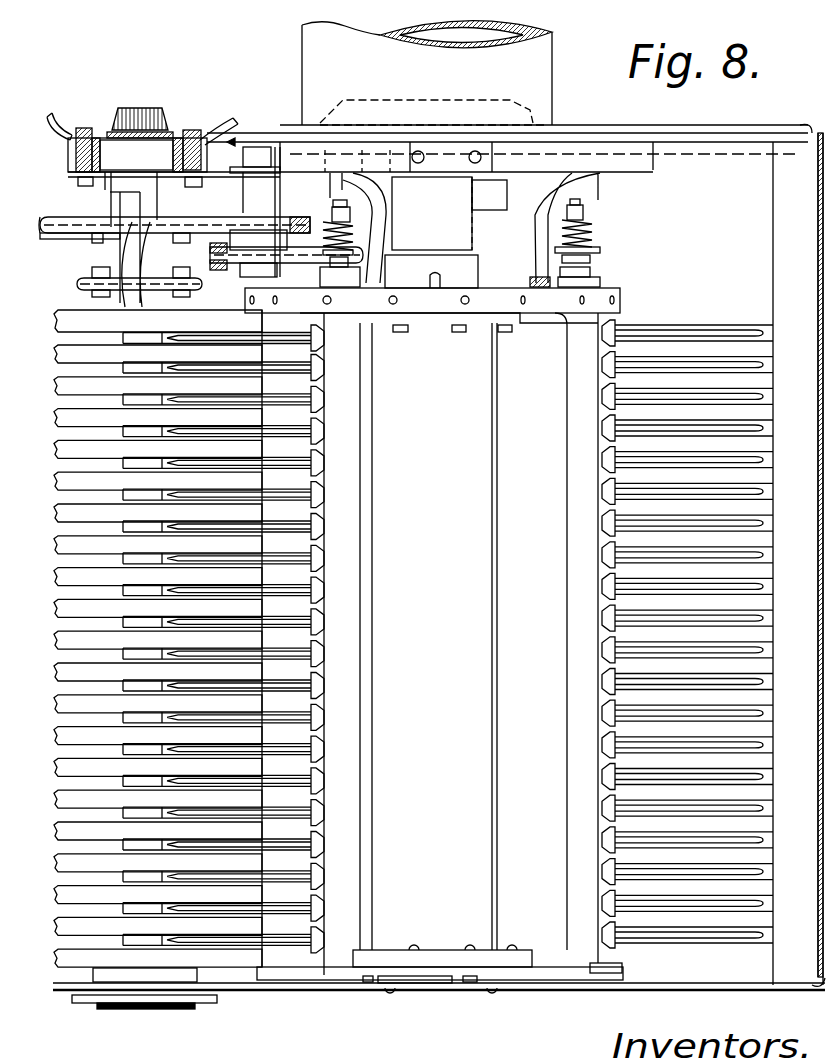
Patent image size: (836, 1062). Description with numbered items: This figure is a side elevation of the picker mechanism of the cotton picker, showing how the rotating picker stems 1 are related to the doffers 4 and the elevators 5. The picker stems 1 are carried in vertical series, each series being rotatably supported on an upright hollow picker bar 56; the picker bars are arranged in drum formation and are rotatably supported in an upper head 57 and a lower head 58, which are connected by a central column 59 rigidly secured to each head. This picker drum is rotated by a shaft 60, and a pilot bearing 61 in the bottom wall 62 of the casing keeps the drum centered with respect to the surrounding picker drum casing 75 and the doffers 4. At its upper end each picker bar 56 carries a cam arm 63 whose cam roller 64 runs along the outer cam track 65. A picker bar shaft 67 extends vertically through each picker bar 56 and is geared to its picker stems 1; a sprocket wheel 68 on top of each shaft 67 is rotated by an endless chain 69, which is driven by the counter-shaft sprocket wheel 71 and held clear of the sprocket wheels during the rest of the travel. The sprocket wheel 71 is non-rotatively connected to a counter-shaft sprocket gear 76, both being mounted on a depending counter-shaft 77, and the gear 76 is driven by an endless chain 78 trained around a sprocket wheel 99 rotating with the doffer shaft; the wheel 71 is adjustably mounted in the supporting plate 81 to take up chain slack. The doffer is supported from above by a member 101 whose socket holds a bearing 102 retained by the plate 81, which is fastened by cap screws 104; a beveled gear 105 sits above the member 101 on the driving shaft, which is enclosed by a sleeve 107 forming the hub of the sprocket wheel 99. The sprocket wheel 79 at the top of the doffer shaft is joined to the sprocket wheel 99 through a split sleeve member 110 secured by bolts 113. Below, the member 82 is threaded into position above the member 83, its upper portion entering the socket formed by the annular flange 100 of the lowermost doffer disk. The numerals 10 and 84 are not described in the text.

The picker stem 1 is at (653, 942).
The doffer 4 is at (262, 698).
The elevator 5 is at (677, 413).
The frame 10 is at (110, 193).
The picker bar 56 is at (580, 632).
The upper head 57 is at (615, 285).
The lower head 58 is at (548, 968).
The central column 59 is at (487, 413).
The shaft 60 is at (467, 218).
The pilot bearing 61 is at (433, 978).
The bottom wall 62 is at (297, 982).
The cam arm 63 is at (470, 258).
The cam roller 64 is at (342, 177).
The outer cam track 65 is at (635, 150).
The picker bar shaft 67 is at (333, 205).
The sprocket wheel 68 is at (372, 275).
The endless chain 69 is at (595, 247).
The counter-shaft sprocket wheel 71 is at (218, 270).
The picker drum casing 75 is at (818, 950).
The counter-shaft sprocket gear 76 is at (275, 222).
The counter-shaft 77 is at (246, 202).
The endless chain 78 is at (42, 215).
The sprocket wheel 79 is at (80, 282).
The supporting plate 81 is at (113, 175).
The member 82 is at (195, 1008).
The member 83 is at (135, 1000).
The pin 84 is at (125, 910).
The sprocket wheel 99 is at (143, 228).
The annular flange 100 is at (122, 975).
The member 101 is at (57, 118).
The bearing 102 is at (170, 140).
The cap screw 104 is at (84, 128).
The beveled gear 105 is at (140, 108).
The sleeve 107 is at (150, 208).
The split sleeve member 110 is at (148, 270).
The bolt 113 is at (125, 305).